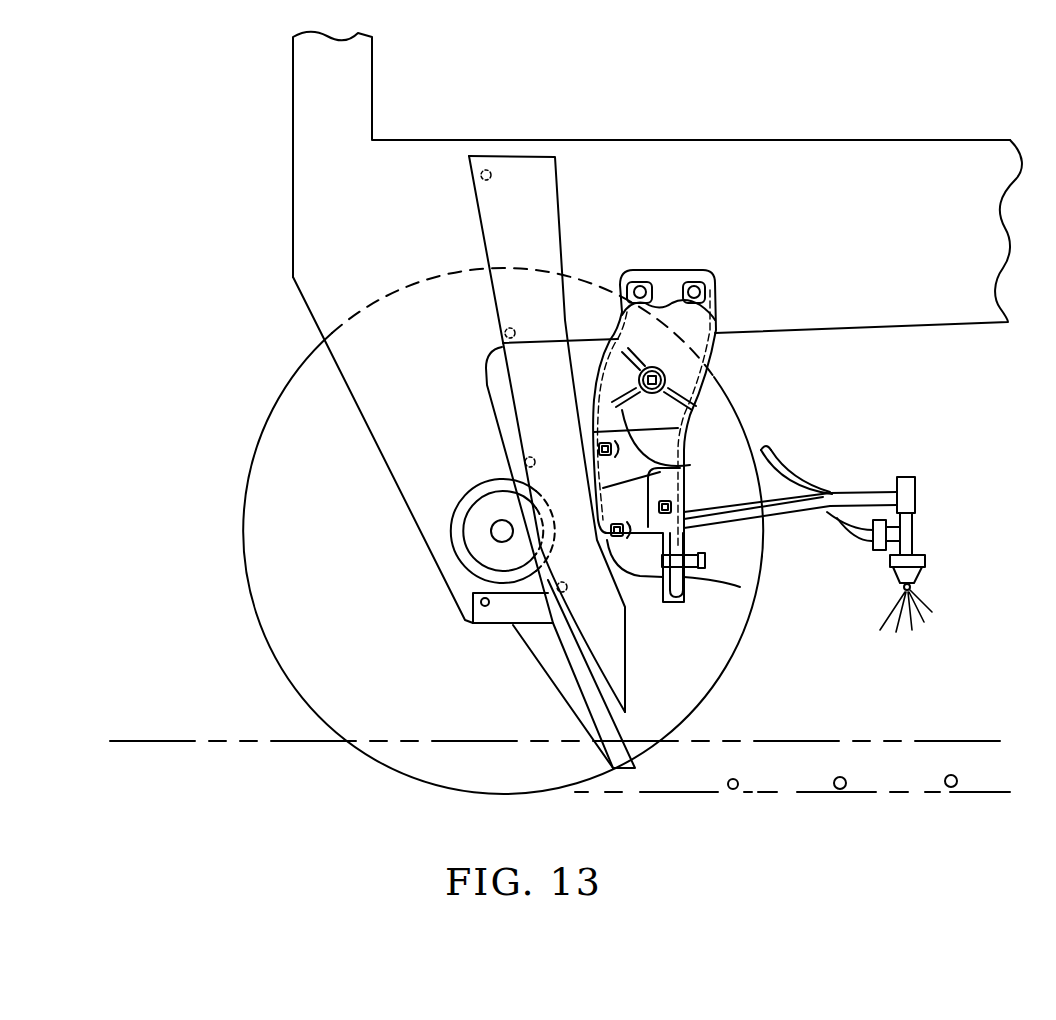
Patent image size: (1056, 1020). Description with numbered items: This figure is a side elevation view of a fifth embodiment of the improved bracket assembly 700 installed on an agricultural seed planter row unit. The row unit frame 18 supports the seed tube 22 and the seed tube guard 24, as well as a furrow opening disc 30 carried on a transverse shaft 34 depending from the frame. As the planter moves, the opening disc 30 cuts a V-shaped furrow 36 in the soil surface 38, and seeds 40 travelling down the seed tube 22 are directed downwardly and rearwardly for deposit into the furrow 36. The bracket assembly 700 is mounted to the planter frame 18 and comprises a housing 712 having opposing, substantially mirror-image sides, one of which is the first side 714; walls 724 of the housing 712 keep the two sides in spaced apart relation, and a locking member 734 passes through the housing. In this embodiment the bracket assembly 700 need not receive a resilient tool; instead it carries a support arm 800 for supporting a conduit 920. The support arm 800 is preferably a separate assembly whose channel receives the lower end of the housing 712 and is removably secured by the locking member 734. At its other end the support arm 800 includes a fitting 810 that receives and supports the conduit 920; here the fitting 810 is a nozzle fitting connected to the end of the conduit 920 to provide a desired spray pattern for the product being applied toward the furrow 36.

The row unit frame 18 is at (832, 145).
The seed tube 22 is at (527, 390).
The seed tube guard 24 is at (555, 672).
The furrow opening discs 30 is at (257, 528).
The transverse shaft 34 is at (491, 533).
The furrow 36 is at (785, 775).
The soil surface 38 is at (184, 740).
The seeds 40 is at (478, 180).
The improved bracket assembly 700 is at (688, 452).
The housing 712 is at (710, 362).
The first side 714 is at (662, 433).
The walls 724 is at (712, 312).
The locking member 734 is at (740, 584).
The support arm 800 is at (872, 488).
The fitting 810 is at (915, 497).
The conduit 920 is at (787, 470).